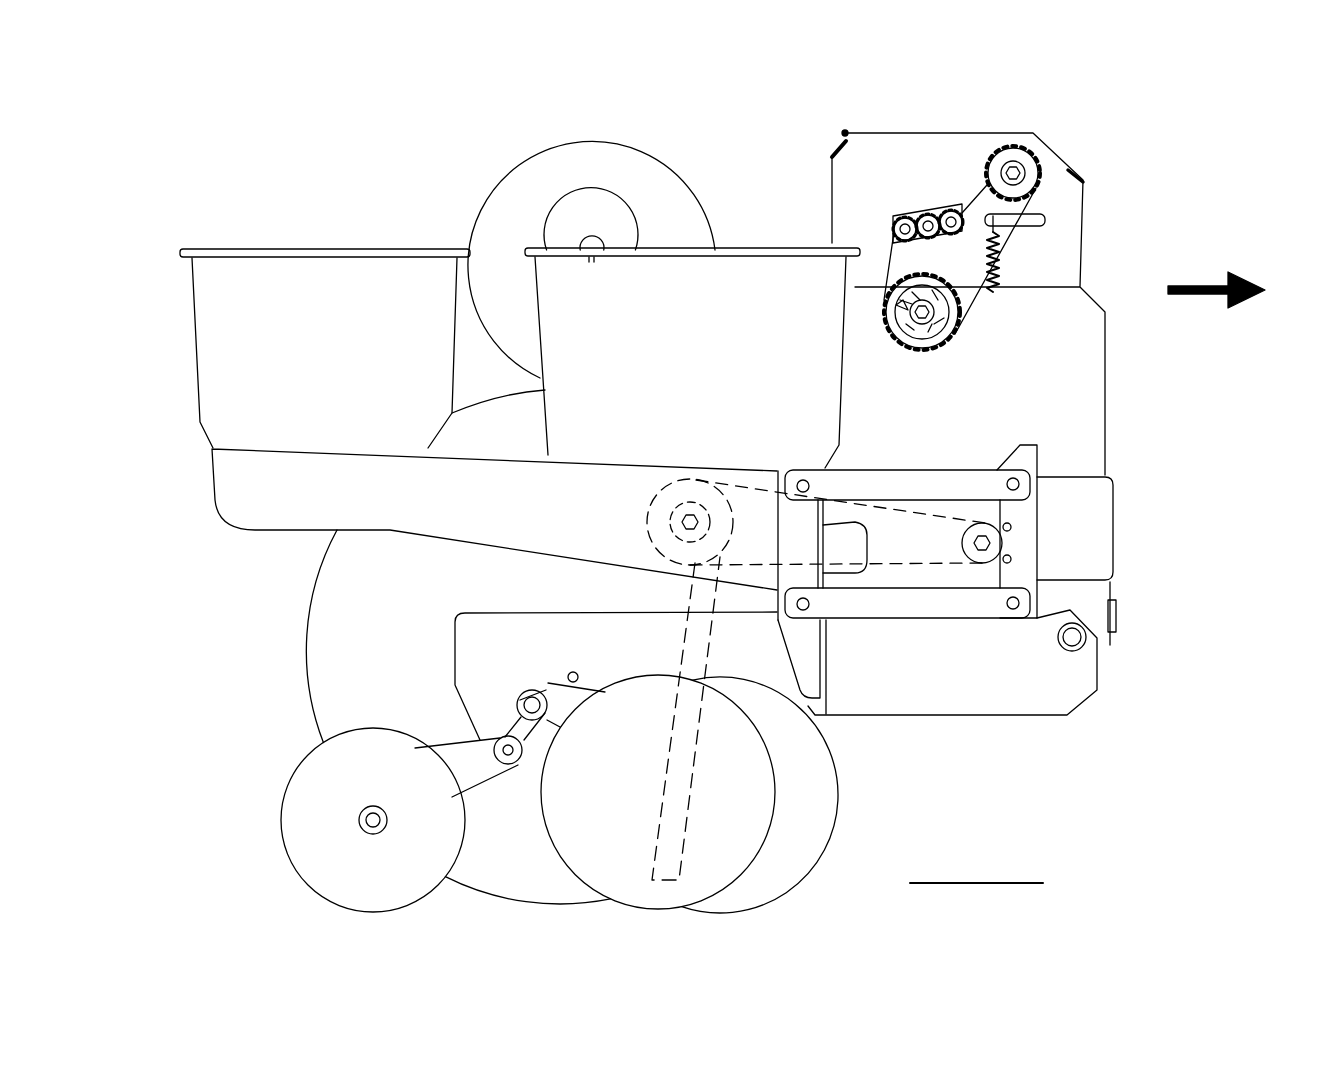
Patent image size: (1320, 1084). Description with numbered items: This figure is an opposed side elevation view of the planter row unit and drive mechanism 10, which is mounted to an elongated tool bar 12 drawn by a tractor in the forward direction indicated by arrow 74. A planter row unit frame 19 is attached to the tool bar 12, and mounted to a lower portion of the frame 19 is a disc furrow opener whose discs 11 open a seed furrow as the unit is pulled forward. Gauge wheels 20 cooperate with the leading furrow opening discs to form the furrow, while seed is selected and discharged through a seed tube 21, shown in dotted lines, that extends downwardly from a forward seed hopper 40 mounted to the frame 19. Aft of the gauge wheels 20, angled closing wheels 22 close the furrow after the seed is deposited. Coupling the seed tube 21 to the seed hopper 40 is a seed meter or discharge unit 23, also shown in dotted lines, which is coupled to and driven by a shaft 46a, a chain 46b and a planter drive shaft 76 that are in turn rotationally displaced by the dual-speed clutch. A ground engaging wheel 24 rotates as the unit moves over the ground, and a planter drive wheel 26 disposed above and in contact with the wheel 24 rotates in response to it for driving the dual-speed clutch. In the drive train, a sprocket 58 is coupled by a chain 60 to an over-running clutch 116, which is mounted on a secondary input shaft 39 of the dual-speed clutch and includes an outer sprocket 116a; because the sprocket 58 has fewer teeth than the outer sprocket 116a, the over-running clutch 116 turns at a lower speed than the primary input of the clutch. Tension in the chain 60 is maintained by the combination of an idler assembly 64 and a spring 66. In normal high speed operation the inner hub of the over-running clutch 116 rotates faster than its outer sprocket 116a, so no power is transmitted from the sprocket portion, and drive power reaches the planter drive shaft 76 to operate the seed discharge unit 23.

The planter row unit and drive mechanism 10 is at (365, 150).
The discs 11 is at (864, 781).
The tool bar 12 is at (1097, 510).
The planter row unit frame 19 is at (446, 502).
The gauge wheels 20 is at (662, 897).
The seed tube 21 is at (688, 657).
The closing wheels 22 is at (300, 790).
The seed meter or discharge unit 23 is at (650, 510).
The ground engaging wheel 24 is at (327, 632).
The planter drive wheel 26 is at (563, 170).
The secondary input shaft 39 is at (914, 330).
The seed hopper 40 is at (660, 357).
The shaft 46a is at (650, 523).
The chain 46b is at (890, 560).
The sprocket 58 is at (1022, 152).
The chain 60 is at (978, 188).
The idler assembly 64 is at (920, 212).
The spring 66 is at (995, 268).
The arrow 74 is at (1190, 287).
The planter drive shaft 76 is at (960, 565).
The over-running clutch 116 is at (964, 345).
The outer sprocket 116a is at (886, 320).